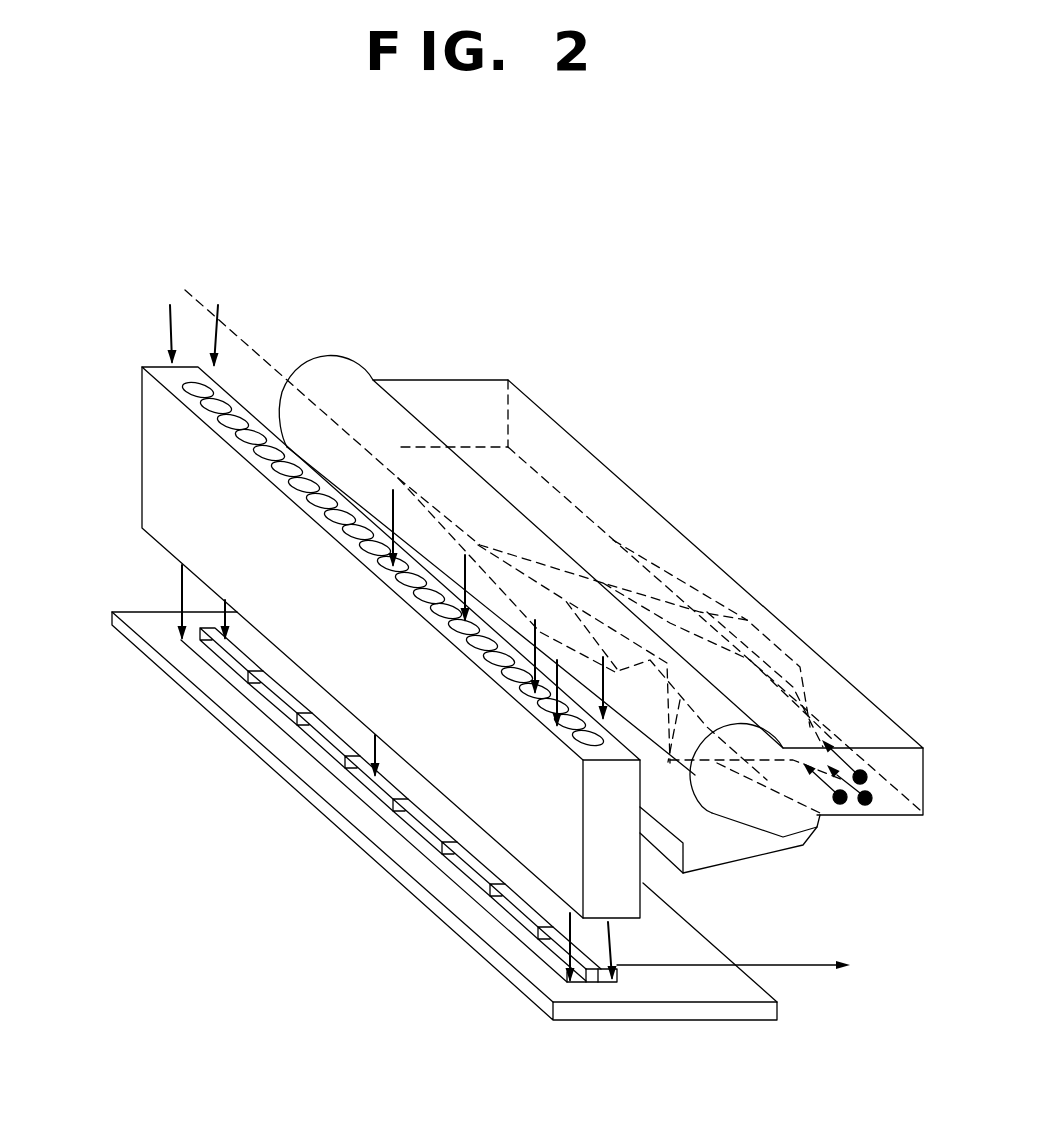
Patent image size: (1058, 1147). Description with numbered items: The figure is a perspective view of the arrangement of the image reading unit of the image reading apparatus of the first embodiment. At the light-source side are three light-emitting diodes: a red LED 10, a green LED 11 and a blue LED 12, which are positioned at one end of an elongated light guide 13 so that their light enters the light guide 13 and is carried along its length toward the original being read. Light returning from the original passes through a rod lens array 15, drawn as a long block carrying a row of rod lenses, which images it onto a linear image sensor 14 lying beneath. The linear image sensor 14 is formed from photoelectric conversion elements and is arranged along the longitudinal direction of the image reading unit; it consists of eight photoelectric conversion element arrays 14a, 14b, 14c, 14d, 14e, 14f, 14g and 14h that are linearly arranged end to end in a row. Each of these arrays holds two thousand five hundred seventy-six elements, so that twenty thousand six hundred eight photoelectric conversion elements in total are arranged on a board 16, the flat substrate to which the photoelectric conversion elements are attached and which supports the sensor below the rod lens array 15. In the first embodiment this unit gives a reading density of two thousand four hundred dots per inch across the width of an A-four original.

The red LED 10 is at (862, 768).
The green LED 11 is at (866, 806).
The blue LED 12 is at (840, 806).
The light guide 13 is at (676, 524).
The linear image sensor 14 is at (198, 645).
The photoelectric conversion element array 14a is at (208, 650).
The photoelectric conversion element array 14b is at (256, 692).
The photoelectric conversion element array 14c is at (305, 736).
The photoelectric conversion element array 14d is at (355, 777).
The photoelectric conversion element array 14e is at (402, 820).
The photoelectric conversion element array 14f is at (450, 862).
The photoelectric conversion element array 14g is at (498, 905).
The photoelectric conversion element array 14h is at (546, 948).
The rod lens array 15 is at (141, 450).
The board 16 is at (710, 1022).